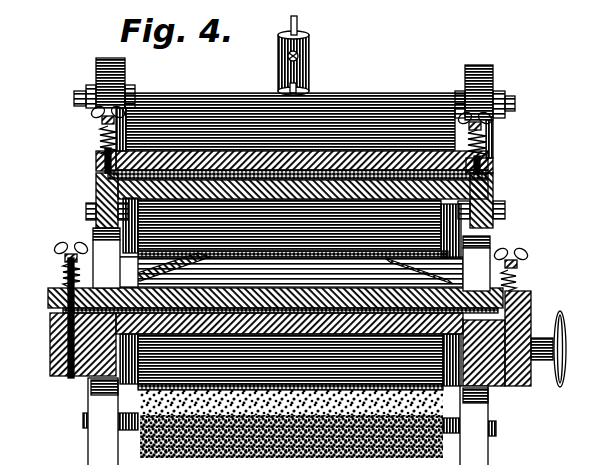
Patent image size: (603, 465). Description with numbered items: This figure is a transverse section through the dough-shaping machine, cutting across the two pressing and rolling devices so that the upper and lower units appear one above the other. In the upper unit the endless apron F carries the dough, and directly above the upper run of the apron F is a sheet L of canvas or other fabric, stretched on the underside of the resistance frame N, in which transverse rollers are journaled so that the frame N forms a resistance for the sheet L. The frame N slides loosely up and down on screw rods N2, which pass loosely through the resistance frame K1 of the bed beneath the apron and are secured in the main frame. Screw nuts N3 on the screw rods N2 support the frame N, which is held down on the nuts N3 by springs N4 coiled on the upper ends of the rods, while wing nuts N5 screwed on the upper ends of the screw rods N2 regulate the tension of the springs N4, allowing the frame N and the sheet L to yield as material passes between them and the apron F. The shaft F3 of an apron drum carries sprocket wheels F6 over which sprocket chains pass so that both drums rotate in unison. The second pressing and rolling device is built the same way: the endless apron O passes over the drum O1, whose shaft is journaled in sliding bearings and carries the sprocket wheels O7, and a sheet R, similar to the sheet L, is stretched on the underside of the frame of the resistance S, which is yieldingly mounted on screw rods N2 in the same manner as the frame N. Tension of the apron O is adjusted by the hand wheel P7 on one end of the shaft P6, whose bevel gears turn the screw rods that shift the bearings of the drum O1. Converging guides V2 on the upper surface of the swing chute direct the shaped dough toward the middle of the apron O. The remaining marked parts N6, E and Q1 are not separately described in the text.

The spindle thumb nut N6 is at (78, 97).
The resistance frame N is at (392, 158).
The screw rods N2 is at (88, 148).
The screw nuts N3 is at (88, 165).
The springs N4 is at (92, 122).
The wing nuts N5 is at (506, 103).
The sheet L is at (299, 136).
The endless apron F is at (205, 188).
The shaft F3 is at (86, 200).
The sprocket wheels F6 is at (85, 225).
The bed E is at (280, 248).
The resistance frame K1 is at (236, 188).
The converging guides V2 is at (291, 265).
The resistance S is at (289, 314).
The sheet R is at (216, 326).
The endless apron O is at (268, 380).
The drum O1 is at (318, 327).
The roll Q1 is at (357, 328).
The sprocket wheels O7 is at (85, 383).
The shaft P6 is at (535, 355).
The hand wheel P7 is at (548, 380).